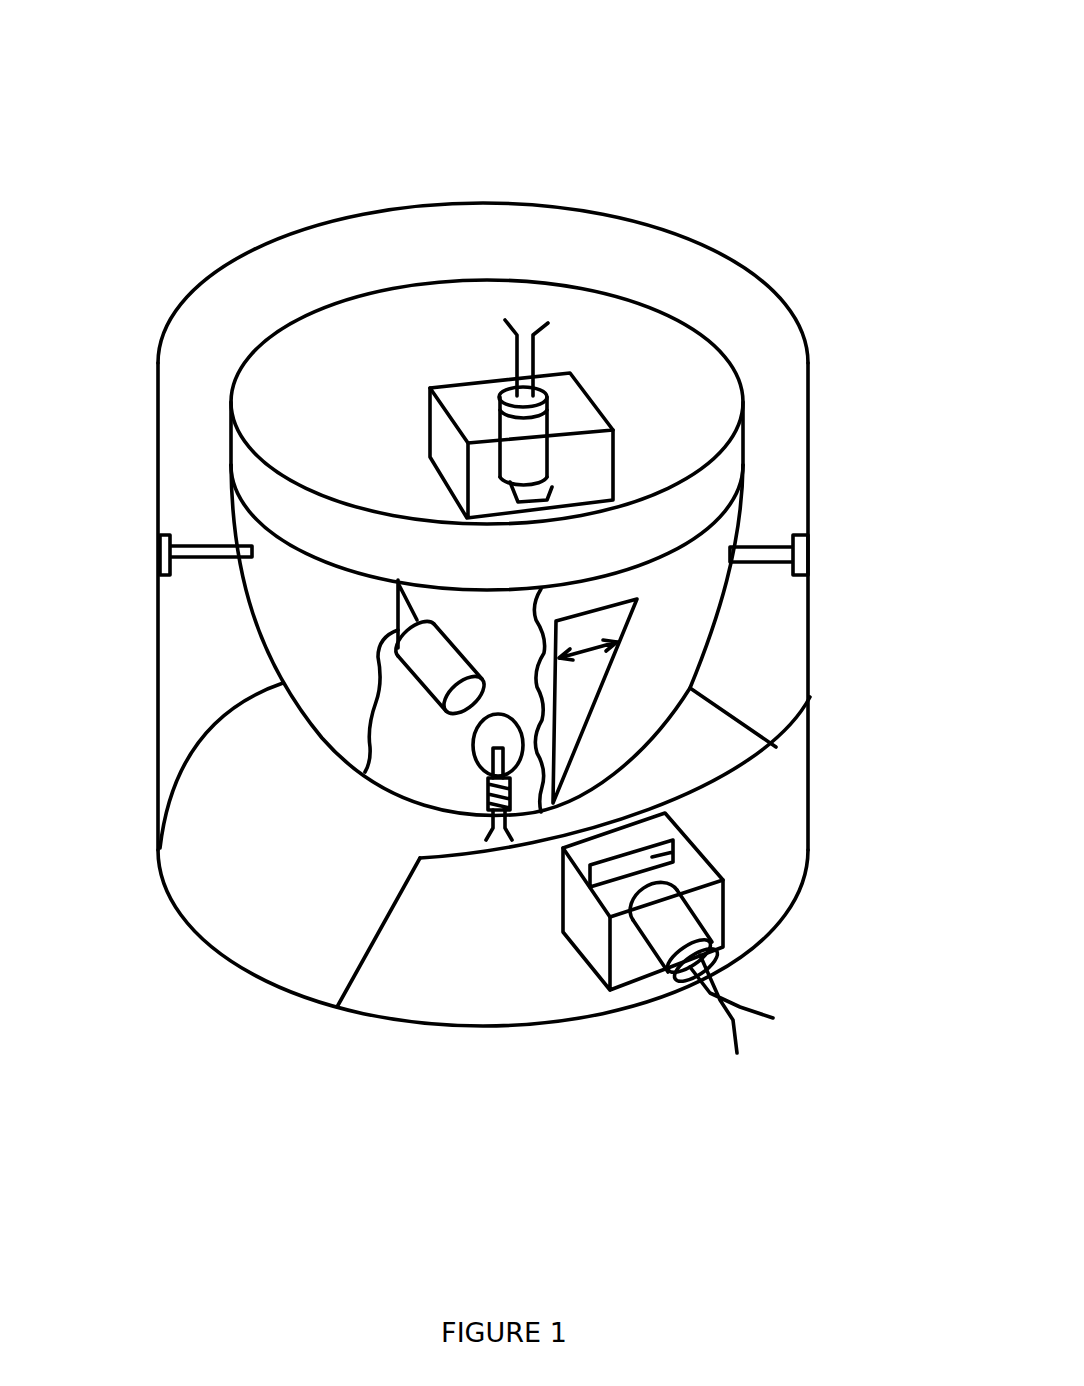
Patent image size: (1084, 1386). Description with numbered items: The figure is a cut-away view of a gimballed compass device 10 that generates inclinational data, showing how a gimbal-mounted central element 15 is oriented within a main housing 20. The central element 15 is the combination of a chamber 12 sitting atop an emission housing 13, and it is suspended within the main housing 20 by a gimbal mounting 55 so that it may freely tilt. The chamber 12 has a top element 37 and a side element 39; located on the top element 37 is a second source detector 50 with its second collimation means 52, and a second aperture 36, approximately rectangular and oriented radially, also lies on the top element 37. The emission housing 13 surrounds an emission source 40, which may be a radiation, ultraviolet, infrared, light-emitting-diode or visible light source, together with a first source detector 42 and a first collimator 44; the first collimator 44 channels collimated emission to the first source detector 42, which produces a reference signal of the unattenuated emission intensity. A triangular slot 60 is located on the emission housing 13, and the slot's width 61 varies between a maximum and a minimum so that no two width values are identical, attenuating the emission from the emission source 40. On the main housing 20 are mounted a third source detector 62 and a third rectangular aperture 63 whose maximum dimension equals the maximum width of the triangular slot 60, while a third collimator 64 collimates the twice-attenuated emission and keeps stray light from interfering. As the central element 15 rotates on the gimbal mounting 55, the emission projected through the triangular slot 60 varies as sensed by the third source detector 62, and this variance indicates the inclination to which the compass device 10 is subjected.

The gimballed compass device 10 is at (287, 107).
The chamber 12 is at (693, 500).
The emission housing 13 is at (677, 600).
The central element 15 is at (499, 520).
The main housing 20 is at (185, 913).
The second aperture 36 is at (517, 493).
The top element 37 is at (385, 310).
The side element 39 is at (228, 423).
The emission source 40 is at (485, 760).
The first source detector 42 is at (400, 650).
The first collimator 44 is at (432, 672).
The second source detector 50 is at (543, 397).
The second collimation means 52 is at (547, 445).
The gimbal mounting 55 is at (207, 557).
The triangular slot 60 is at (582, 712).
The triangular slot's width 61 is at (600, 647).
The third source detector 62 is at (716, 954).
The third rectangular aperture 63 is at (696, 841).
The third collimator 64 is at (670, 915).